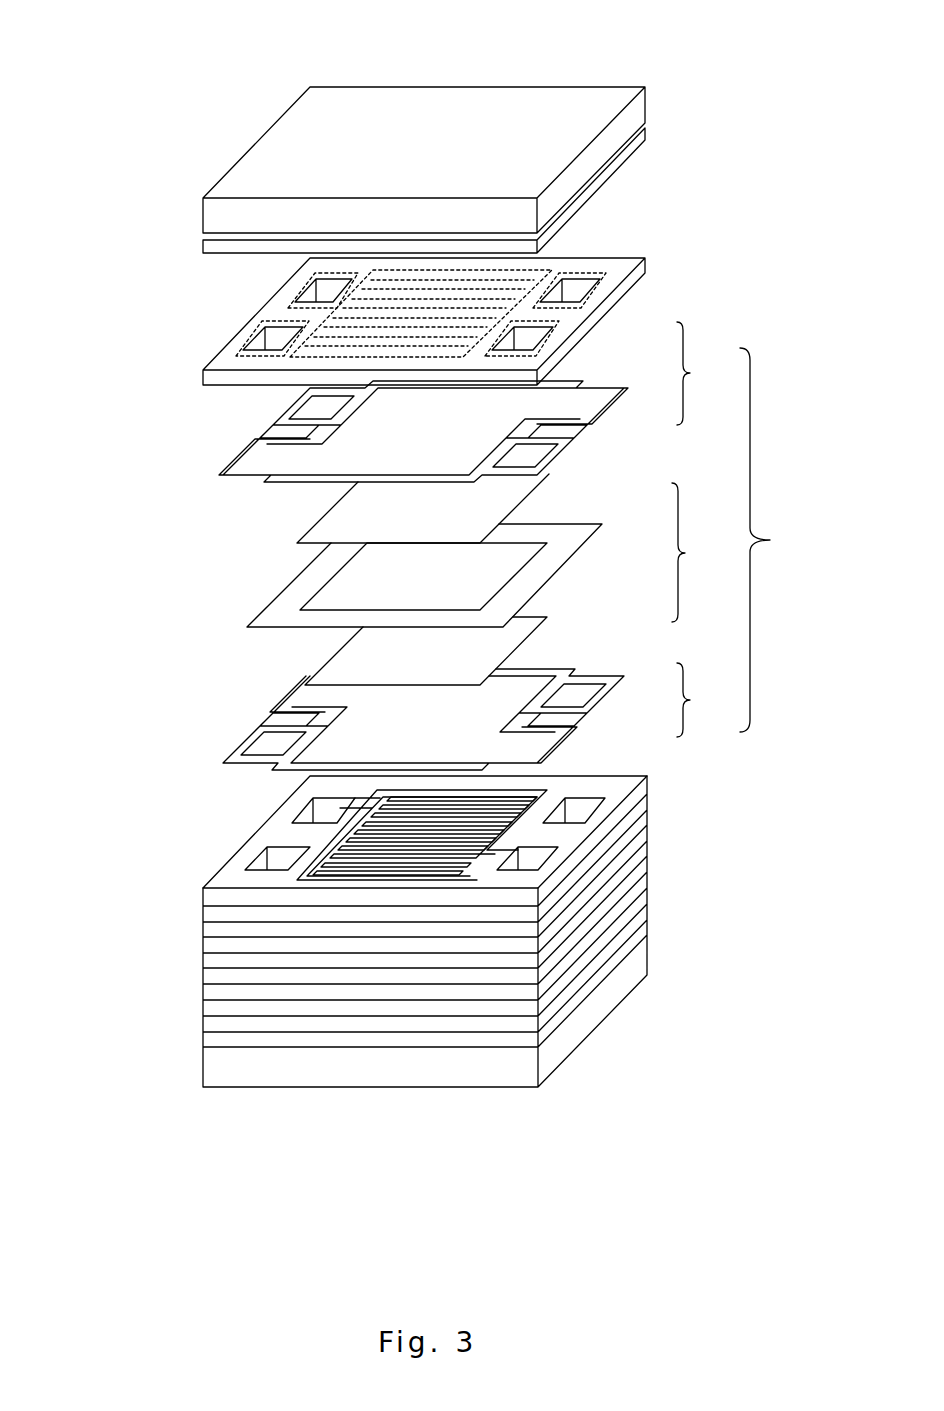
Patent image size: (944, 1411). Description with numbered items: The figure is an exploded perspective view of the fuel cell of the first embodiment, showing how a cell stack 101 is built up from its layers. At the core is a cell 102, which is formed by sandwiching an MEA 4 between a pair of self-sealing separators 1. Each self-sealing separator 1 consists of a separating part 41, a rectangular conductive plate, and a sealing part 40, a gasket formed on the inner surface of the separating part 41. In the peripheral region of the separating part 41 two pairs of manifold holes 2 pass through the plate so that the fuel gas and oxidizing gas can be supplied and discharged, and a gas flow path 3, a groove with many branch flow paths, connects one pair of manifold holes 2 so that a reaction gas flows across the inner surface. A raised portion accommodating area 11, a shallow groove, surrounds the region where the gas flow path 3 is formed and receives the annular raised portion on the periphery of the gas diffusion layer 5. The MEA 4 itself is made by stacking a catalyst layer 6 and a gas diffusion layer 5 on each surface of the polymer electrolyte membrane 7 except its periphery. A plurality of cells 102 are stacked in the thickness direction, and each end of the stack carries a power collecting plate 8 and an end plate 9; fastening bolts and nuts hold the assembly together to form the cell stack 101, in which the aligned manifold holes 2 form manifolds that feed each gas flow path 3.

The cell stack 101 is at (160, 107).
The cell 102 is at (782, 540).
The self-sealing separator 1 is at (691, 529).
The manifold hole 2 is at (262, 340).
The gas flow path 3 is at (362, 332).
The MEA 4 is at (687, 552).
The gas diffusion layer 5 is at (540, 493).
The catalyst layer 6 is at (532, 558).
The polymer electrolyte membrane 7 is at (552, 577).
The power collecting plate 8 is at (645, 137).
The end plate 9 is at (645, 105).
The raised portion accommodating area 11 is at (540, 273).
The sealing part 40 is at (595, 420).
The separating part 41 is at (613, 320).